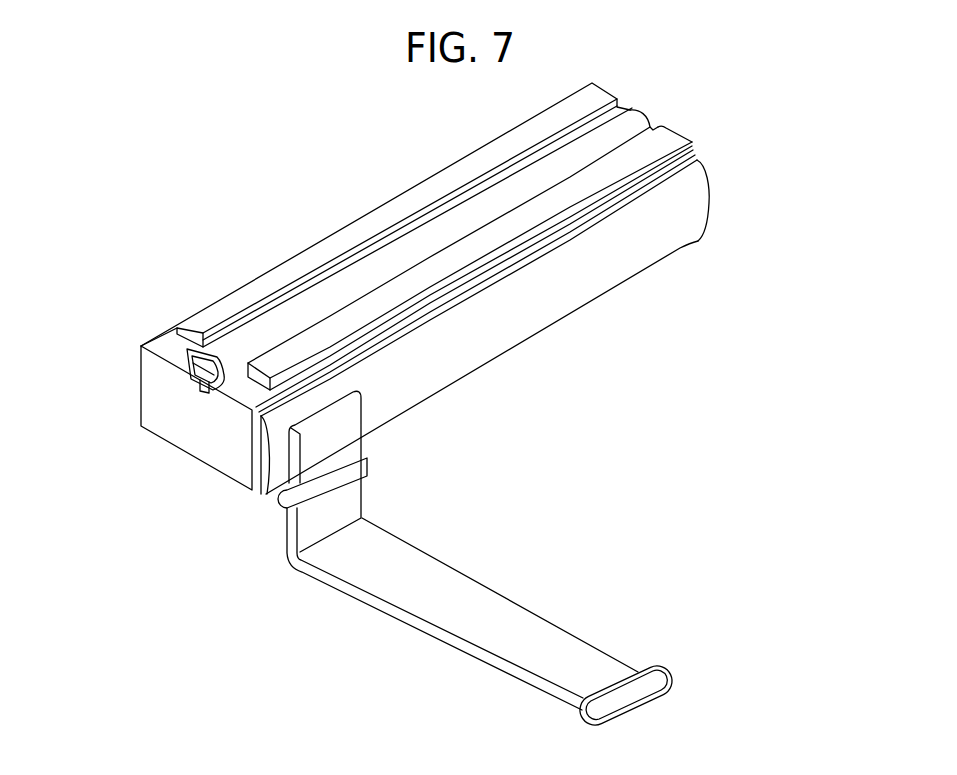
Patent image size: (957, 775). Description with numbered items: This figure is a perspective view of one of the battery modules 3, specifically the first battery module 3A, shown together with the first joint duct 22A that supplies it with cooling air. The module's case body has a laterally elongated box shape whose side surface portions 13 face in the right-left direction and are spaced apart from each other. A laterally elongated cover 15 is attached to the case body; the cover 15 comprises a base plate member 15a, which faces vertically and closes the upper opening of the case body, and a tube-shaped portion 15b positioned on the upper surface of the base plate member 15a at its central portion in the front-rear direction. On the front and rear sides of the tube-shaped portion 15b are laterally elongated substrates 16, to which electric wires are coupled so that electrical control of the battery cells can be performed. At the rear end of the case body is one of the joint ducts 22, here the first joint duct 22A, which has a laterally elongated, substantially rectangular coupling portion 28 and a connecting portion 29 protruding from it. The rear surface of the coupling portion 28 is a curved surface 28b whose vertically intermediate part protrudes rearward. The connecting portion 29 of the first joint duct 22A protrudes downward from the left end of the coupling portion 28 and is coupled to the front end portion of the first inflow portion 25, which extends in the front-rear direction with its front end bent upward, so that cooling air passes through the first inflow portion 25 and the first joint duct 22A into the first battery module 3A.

The battery module 3 is at (200, 442).
The first battery module 3A is at (175, 425).
The side surface portion 13 is at (178, 432).
The cover 15 is at (380, 260).
The base plate member 15a is at (165, 341).
The tube-shaped portion 15b is at (420, 238).
The substrate 16 is at (468, 167).
The joint duct 22 is at (628, 267).
The first joint duct 22A is at (482, 322).
The coupling portion 28 is at (478, 353).
The curved surface 28b is at (560, 313).
The connecting portion 29 is at (352, 418).
The first inflow portion 25 is at (470, 590).